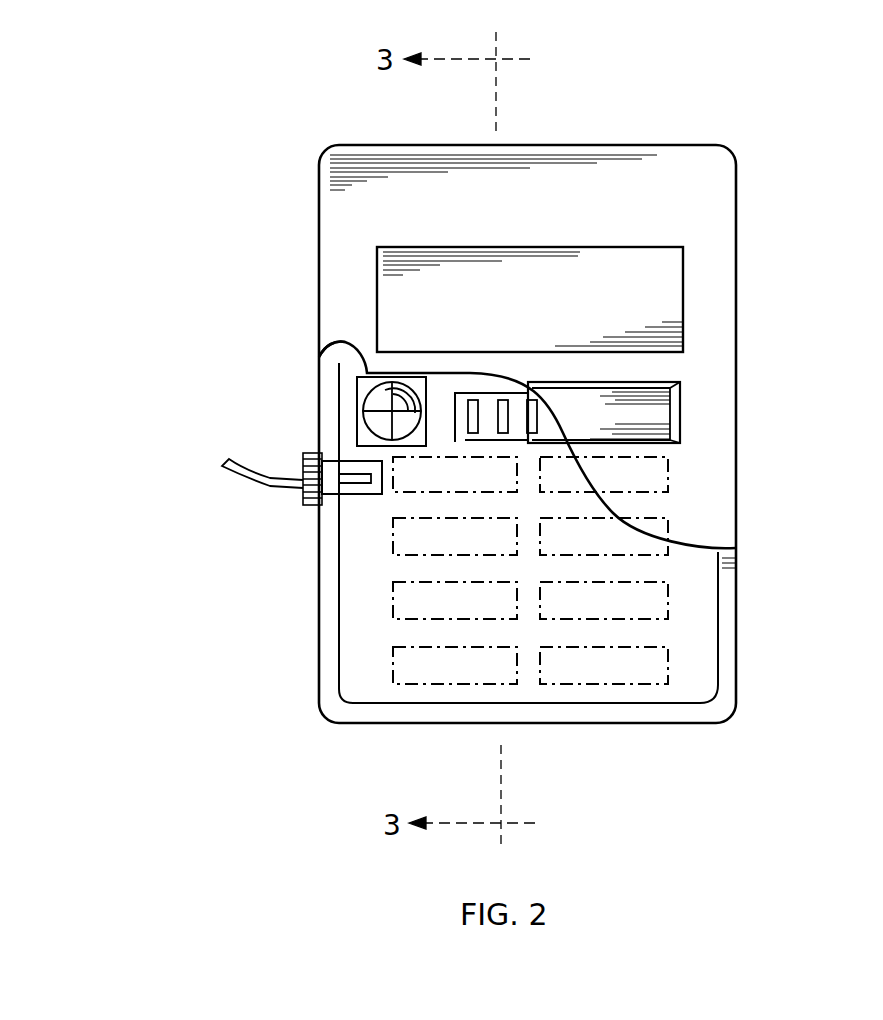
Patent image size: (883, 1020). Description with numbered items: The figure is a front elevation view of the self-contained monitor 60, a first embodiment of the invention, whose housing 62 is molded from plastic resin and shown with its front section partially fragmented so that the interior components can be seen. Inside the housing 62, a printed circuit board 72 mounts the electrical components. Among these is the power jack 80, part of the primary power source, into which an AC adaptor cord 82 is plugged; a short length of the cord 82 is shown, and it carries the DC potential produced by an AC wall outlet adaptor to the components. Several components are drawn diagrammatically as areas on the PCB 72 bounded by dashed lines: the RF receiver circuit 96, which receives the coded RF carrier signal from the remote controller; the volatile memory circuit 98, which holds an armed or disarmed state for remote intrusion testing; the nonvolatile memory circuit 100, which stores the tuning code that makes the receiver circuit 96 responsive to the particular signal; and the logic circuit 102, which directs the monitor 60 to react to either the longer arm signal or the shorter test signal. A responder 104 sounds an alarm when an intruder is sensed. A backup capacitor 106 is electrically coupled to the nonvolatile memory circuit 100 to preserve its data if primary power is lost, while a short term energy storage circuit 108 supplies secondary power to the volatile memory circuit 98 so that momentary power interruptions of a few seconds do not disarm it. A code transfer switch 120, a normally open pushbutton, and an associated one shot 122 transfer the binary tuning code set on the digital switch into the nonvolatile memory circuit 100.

The self-contained monitor 60 is at (762, 165).
The housing 62 is at (713, 218).
The printed circuit board 72 is at (348, 397).
The power jack 80 is at (306, 452).
The AC adaptor cord 82 is at (237, 473).
The RF receiver circuit 96 is at (393, 542).
The volatile memory circuit 98 is at (393, 604).
The nonvolatile memory circuit 100 is at (393, 672).
The logic circuit 102 is at (668, 527).
The responder 104 is at (668, 613).
The backup capacitor 106 is at (668, 678).
The short term energy storage circuit 108 is at (393, 498).
The code transfer switch 120 is at (330, 339).
The one shot 122 is at (668, 462).